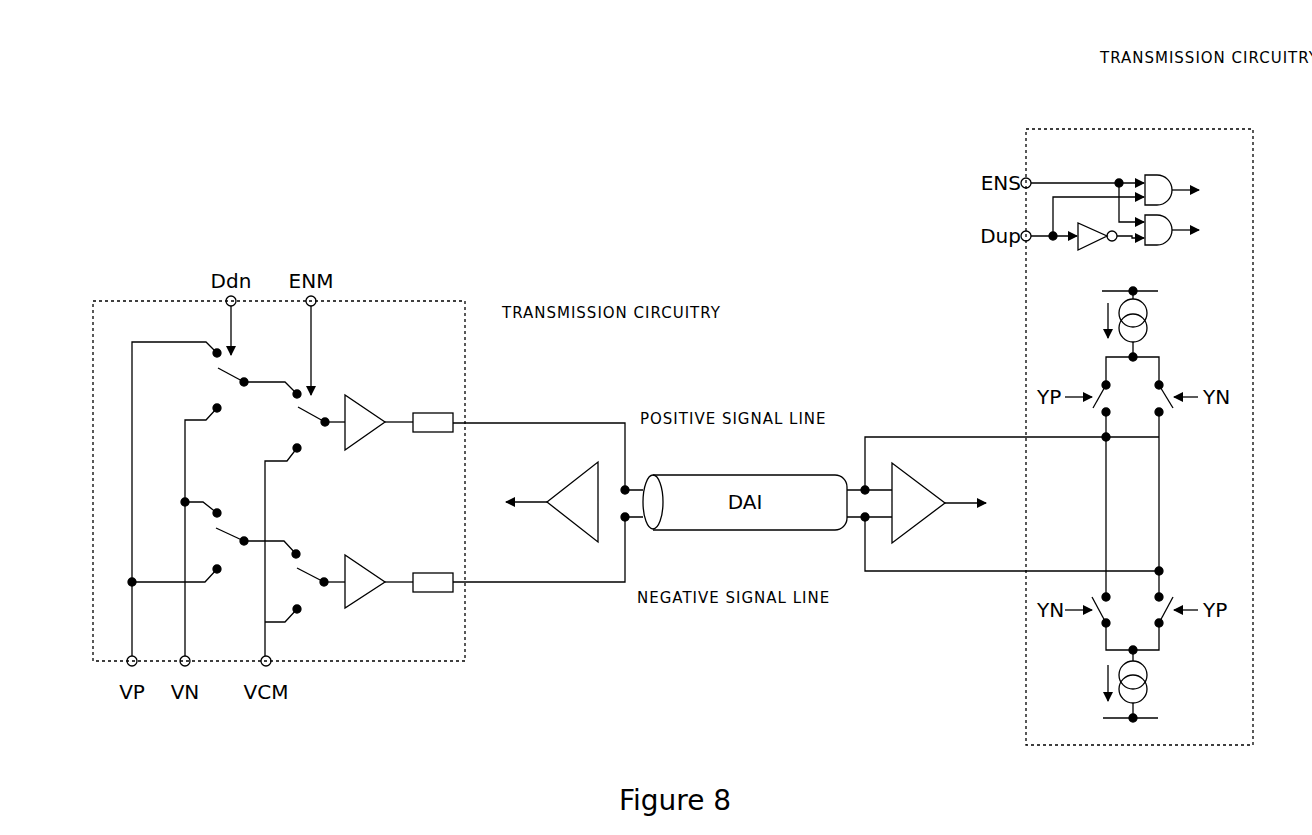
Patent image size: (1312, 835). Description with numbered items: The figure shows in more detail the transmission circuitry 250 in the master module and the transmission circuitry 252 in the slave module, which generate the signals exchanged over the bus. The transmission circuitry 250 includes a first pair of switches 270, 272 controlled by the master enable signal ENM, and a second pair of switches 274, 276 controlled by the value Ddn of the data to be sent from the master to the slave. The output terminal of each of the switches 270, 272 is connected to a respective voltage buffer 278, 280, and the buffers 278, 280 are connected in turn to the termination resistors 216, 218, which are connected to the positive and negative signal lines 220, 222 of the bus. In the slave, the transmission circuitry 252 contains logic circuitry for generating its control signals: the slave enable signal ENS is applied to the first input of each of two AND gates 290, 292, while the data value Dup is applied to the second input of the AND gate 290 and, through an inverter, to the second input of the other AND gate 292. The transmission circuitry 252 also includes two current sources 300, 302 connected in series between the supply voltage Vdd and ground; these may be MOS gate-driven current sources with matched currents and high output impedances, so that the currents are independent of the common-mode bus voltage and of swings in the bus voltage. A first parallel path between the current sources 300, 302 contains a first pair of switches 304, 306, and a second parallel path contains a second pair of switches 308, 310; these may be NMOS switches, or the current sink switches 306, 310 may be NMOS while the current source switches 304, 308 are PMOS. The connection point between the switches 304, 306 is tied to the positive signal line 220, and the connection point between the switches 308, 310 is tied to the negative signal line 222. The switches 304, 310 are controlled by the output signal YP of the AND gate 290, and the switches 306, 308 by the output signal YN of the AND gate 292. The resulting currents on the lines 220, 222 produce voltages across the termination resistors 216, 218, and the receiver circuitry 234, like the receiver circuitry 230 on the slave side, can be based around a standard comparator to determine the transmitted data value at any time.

The transmission circuitry 250 is at (467, 325).
The transmission circuitry 252 is at (1170, 128).
The switch 270 is at (300, 430).
The switch 272 is at (300, 588).
The switch 274 is at (217, 392).
The switch 276 is at (228, 555).
The voltage buffer 278 is at (363, 402).
The voltage buffer 280 is at (362, 560).
The termination resistor 216 is at (423, 412).
The termination resistor 218 is at (427, 595).
The positive signal line 220 is at (640, 487).
The negative signal line 222 is at (638, 522).
The receiver circuitry 234 is at (552, 512).
The receiver circuitry 230 is at (933, 513).
The AND gate 290 is at (1172, 177).
The AND gate 292 is at (1173, 243).
The current source 300 is at (1150, 330).
The current source 302 is at (1147, 690).
The switch 304 is at (1100, 380).
The switch 306 is at (1100, 627).
The switch 308 is at (1167, 380).
The switch 310 is at (1162, 627).